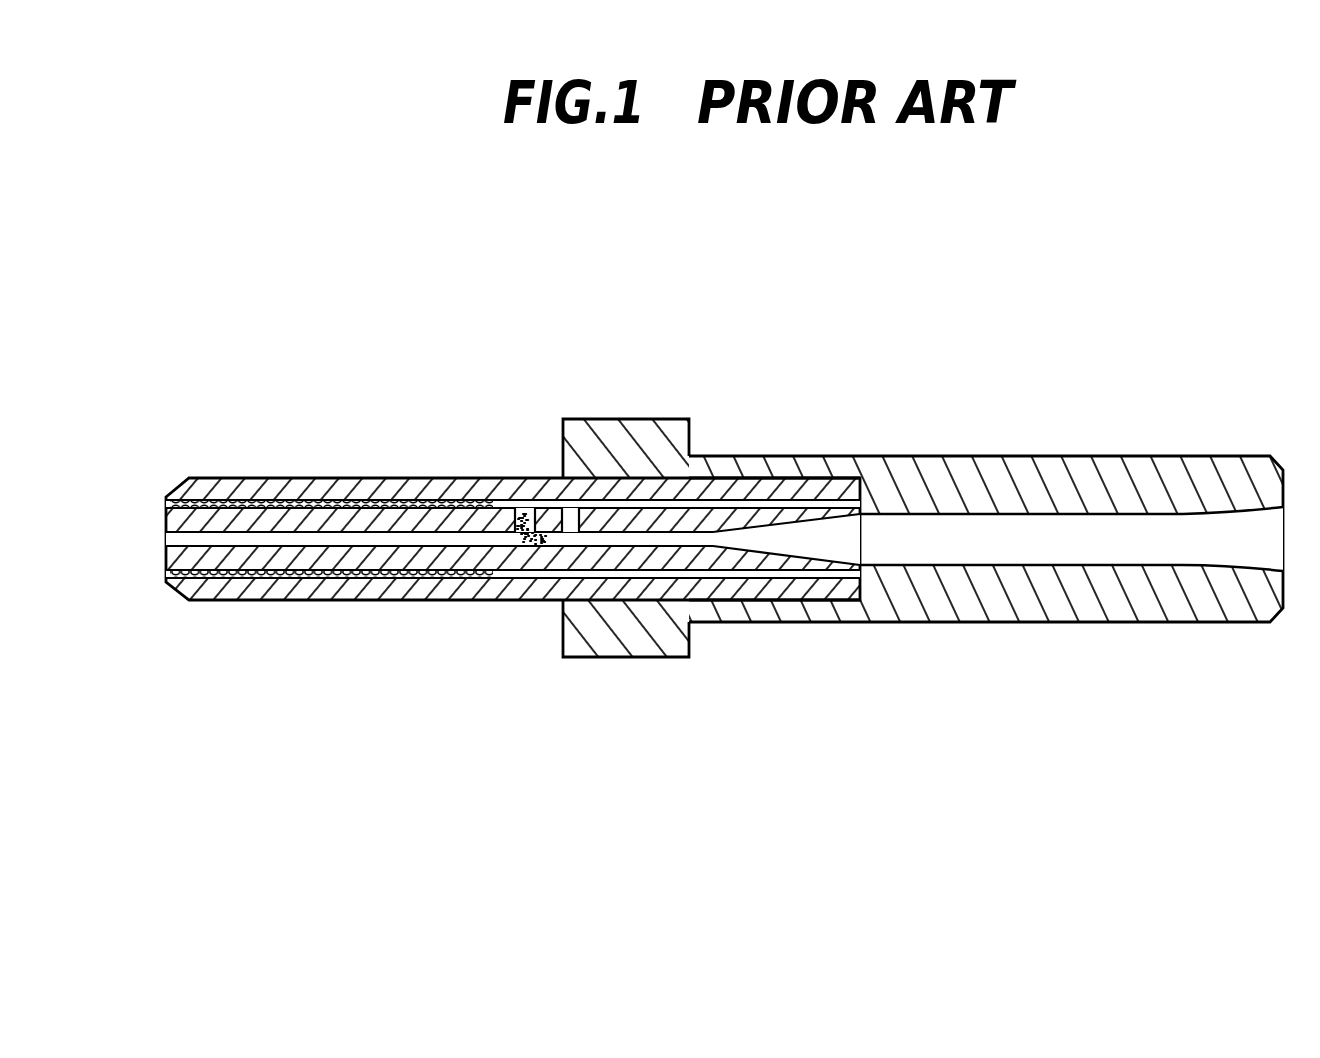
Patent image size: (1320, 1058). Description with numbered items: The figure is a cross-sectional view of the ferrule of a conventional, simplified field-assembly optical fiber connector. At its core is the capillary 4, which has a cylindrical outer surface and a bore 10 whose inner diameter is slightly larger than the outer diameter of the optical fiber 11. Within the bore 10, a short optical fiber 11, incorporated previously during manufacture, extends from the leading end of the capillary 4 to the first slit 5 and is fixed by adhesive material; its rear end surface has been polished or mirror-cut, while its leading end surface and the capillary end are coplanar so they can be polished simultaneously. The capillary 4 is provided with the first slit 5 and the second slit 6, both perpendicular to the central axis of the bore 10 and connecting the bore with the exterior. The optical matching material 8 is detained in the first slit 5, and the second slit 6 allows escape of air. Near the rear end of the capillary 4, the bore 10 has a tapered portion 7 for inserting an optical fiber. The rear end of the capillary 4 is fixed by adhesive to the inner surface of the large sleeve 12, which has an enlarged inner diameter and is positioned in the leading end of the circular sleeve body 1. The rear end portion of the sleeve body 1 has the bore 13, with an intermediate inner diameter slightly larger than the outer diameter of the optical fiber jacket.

The sleeve body 1 is at (1083, 456).
The capillary 4 is at (190, 517).
The first slit 5 is at (515, 505).
The second slit 6 is at (573, 510).
The tapered portion 7 is at (783, 557).
The optical matching material 8 is at (532, 545).
The bore 10 is at (395, 548).
The optical fiber 11 is at (313, 537).
The large sleeve 12 is at (816, 492).
The bore 13 is at (1117, 566).